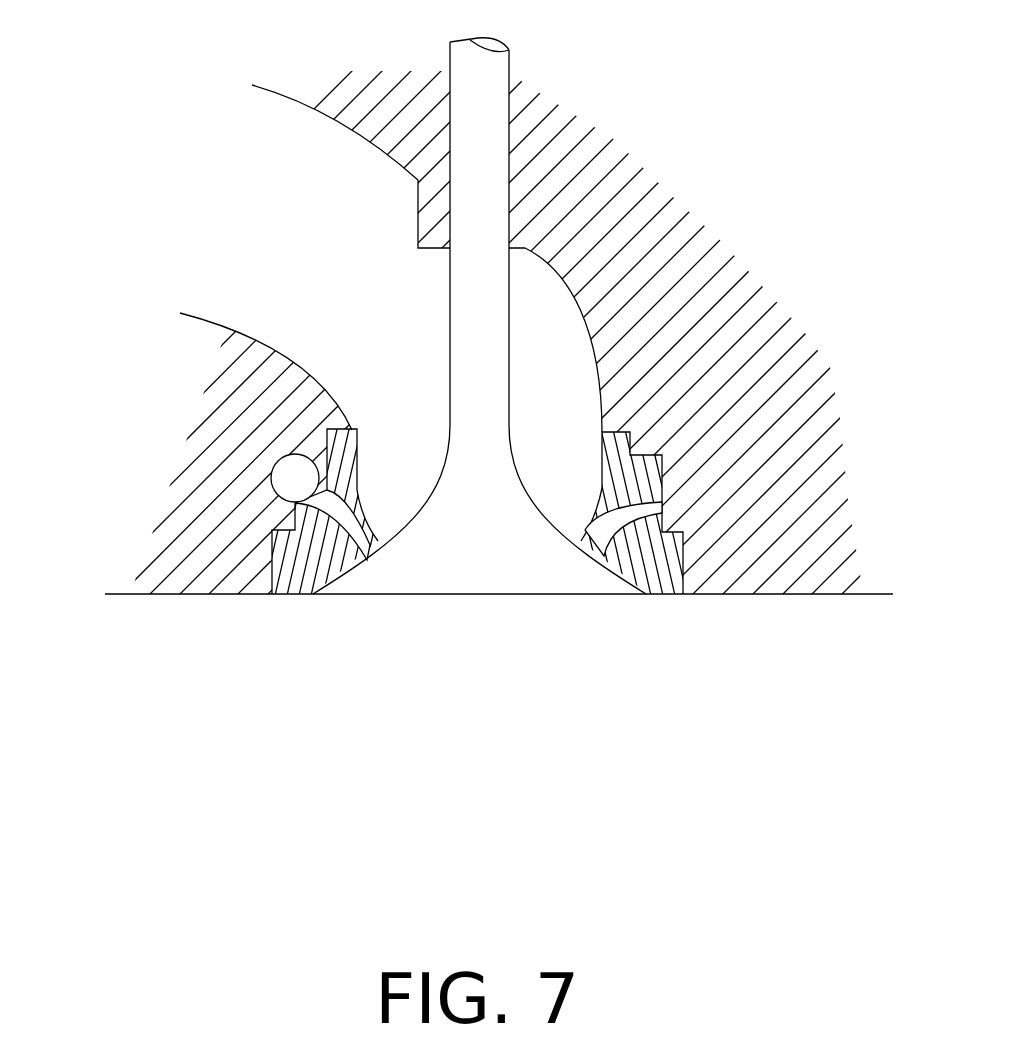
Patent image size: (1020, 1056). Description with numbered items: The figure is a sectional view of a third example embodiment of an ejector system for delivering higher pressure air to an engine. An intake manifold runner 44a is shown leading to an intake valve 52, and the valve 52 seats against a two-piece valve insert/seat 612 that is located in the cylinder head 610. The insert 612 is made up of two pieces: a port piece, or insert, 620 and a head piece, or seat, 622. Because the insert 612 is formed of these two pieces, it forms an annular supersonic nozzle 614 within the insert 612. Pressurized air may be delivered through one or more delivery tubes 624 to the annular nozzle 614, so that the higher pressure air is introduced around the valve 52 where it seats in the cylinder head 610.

The intake manifold runner 44a is at (220, 243).
The intake valve 52 is at (485, 135).
The cylinder head 610 is at (842, 170).
The port piece 620 is at (657, 392).
The head piece 622 is at (652, 575).
The delivery tube 624 is at (283, 458).
The annular supersonic nozzle 614 is at (329, 594).
The valve insert/seat 612 is at (291, 597).